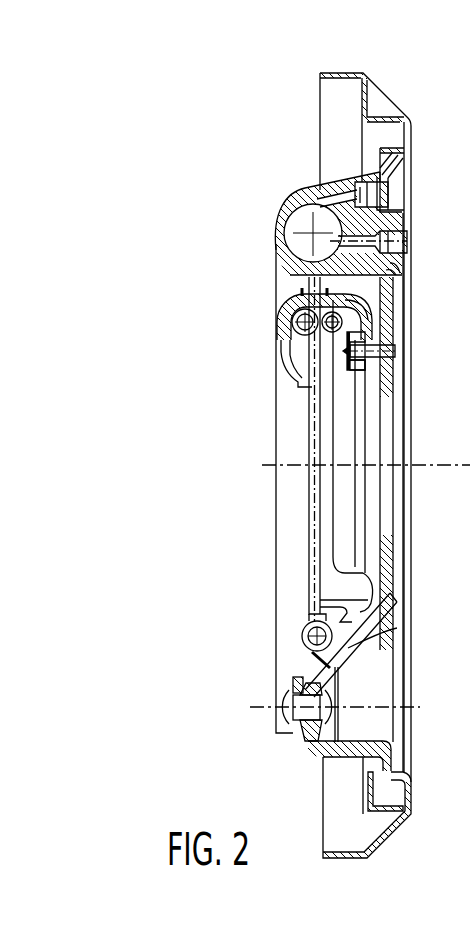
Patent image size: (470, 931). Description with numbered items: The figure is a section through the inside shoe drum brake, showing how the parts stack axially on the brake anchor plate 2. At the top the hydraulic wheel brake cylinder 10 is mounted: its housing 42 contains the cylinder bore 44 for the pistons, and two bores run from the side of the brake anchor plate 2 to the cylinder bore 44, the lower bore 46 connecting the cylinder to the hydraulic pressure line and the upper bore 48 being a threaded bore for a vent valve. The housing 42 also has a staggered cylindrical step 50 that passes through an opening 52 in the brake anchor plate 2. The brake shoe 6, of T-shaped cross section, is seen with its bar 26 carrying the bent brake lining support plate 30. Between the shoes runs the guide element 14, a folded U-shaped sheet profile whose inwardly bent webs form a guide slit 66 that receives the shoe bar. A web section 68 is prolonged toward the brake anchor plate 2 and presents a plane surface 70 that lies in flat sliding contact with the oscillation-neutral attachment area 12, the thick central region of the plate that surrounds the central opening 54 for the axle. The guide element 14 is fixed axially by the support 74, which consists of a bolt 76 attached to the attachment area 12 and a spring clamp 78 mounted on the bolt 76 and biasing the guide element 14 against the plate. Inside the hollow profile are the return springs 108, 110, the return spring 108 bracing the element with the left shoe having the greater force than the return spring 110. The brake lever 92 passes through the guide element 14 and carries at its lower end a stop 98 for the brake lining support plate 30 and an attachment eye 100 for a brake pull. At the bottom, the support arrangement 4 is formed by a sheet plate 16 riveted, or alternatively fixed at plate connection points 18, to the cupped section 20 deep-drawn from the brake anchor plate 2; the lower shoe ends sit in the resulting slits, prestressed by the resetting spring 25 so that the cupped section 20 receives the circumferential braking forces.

The brake anchor plate 2 is at (368, 75).
The support arrangement 4 is at (296, 745).
The brake shoe 6 is at (272, 524).
The hydraulic wheel brake cylinder 10 is at (279, 199).
The attachment area 12 is at (399, 563).
The guide element 14 is at (276, 298).
The sheet plate 16 is at (293, 682).
The plate connection points 18 is at (290, 710).
The cupped section 20 is at (317, 749).
The resetting spring 25 is at (348, 646).
The bar 26 is at (310, 592).
The brake lining support plate 30 is at (290, 563).
The housing 42 is at (280, 241).
The cylinder bore 44 is at (295, 228).
The lower bore 46 is at (400, 247).
The upper bore 48 is at (380, 196).
The staggered cylindrical step 50 is at (395, 222).
The opening 52 is at (400, 267).
The central opening 54 is at (387, 517).
The guide slit 66 is at (312, 390).
The web section 68 is at (378, 317).
The plane surface 70 is at (393, 328).
The support 74 is at (370, 377).
The bolt 76 is at (397, 350).
The spring clamp 78 is at (365, 367).
The brake lever 92 is at (355, 590).
The stop 98 is at (327, 612).
The attachment eye 100 is at (352, 605).
The return spring 108 is at (280, 315).
The return spring 110 is at (292, 345).